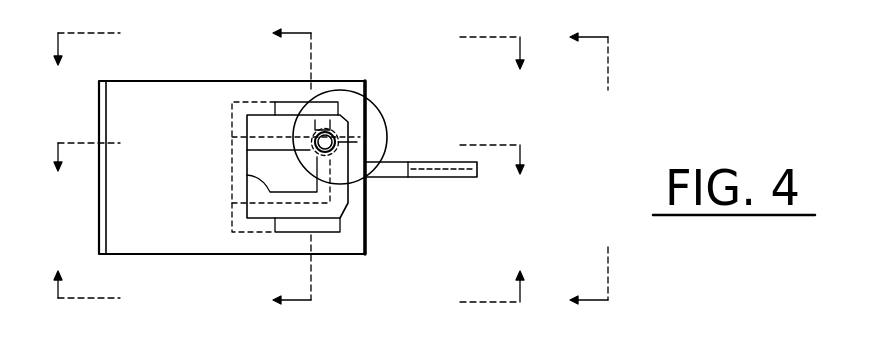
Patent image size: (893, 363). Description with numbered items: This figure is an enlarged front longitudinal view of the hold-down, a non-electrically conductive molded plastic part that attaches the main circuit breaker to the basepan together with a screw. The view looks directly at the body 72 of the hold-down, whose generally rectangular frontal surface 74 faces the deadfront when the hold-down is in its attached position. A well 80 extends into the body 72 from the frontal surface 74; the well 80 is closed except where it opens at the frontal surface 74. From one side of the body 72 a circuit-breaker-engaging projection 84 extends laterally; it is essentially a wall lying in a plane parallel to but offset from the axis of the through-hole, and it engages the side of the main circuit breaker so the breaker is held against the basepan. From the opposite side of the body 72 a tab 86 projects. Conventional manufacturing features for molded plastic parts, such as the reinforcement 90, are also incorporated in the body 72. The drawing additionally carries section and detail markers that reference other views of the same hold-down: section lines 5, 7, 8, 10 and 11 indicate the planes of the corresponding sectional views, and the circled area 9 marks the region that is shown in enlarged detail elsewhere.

The body 72 is at (367, 220).
The frontal surface 74 is at (268, 123).
The well 80 is at (247, 177).
The circuit-breaker-engaging projection 84 is at (441, 160).
The tab 86 is at (153, 108).
The reinforcement 90 is at (357, 200).
The detail area of FIG. 9 is at (383, 115).
The section line 5- 5 is at (290, 286).
The section line 7- 7 is at (589, 171).
The section line 8- 8 is at (291, 55).
The section line 10- 10 is at (292, 160).
The section line 11- 11 is at (283, 0).